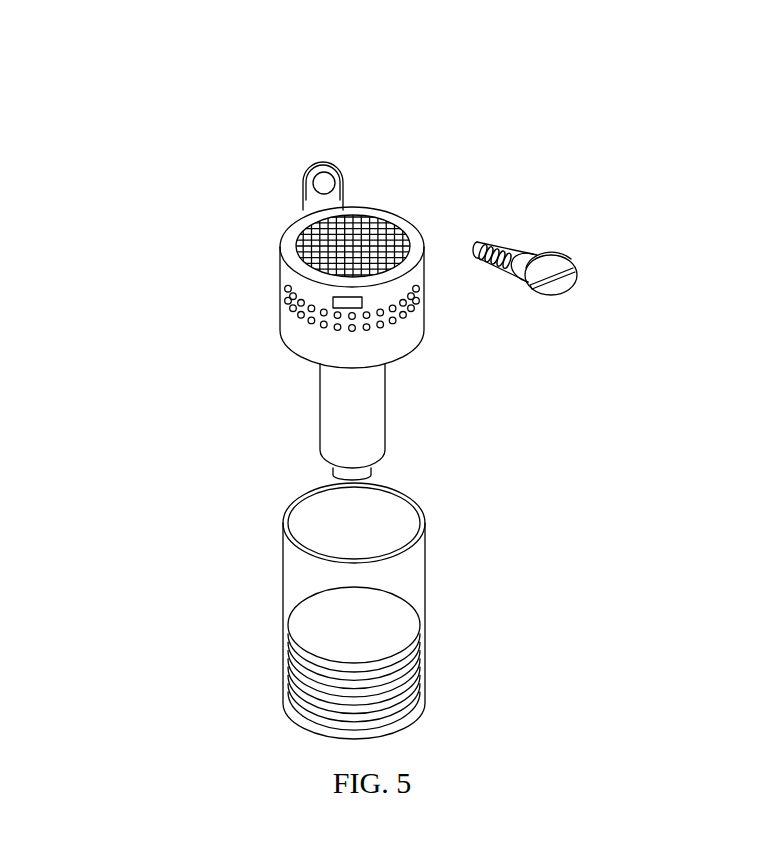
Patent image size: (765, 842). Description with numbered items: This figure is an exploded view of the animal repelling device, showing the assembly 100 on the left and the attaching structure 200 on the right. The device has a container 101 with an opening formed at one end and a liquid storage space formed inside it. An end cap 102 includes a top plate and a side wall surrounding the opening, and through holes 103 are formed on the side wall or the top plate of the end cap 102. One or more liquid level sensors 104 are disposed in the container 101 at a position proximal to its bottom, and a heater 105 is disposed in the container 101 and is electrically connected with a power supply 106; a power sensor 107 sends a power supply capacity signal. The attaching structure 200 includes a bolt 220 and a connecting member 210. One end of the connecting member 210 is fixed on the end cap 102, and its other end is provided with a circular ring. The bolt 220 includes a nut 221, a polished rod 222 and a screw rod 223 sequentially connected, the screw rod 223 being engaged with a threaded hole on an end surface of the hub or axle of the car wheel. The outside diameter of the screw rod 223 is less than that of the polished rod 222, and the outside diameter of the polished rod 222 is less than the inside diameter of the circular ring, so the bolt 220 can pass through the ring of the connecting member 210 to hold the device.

The pet feeder assembly 100 is at (168, 152).
The container 101 is at (300, 578).
The end cap 102 is at (302, 291).
The through holes 103 is at (318, 322).
The liquid level sensor 104 is at (330, 468).
The heater 105 is at (353, 430).
The power supply 106 is at (312, 212).
The power sensor 107 is at (349, 302).
The attaching structure 200 is at (573, 66).
The connecting member 210 is at (327, 198).
The bolt 220 is at (668, 128).
The nut 221 is at (553, 258).
The polished rod 222 is at (520, 261).
The screw rod 223 is at (489, 242).